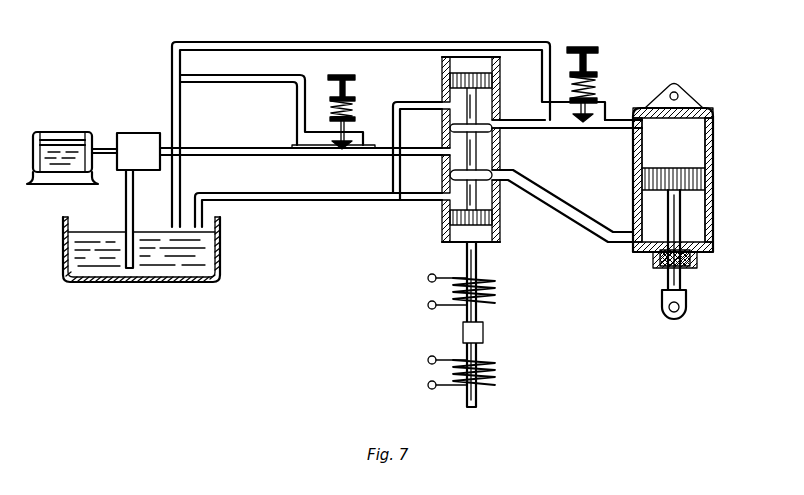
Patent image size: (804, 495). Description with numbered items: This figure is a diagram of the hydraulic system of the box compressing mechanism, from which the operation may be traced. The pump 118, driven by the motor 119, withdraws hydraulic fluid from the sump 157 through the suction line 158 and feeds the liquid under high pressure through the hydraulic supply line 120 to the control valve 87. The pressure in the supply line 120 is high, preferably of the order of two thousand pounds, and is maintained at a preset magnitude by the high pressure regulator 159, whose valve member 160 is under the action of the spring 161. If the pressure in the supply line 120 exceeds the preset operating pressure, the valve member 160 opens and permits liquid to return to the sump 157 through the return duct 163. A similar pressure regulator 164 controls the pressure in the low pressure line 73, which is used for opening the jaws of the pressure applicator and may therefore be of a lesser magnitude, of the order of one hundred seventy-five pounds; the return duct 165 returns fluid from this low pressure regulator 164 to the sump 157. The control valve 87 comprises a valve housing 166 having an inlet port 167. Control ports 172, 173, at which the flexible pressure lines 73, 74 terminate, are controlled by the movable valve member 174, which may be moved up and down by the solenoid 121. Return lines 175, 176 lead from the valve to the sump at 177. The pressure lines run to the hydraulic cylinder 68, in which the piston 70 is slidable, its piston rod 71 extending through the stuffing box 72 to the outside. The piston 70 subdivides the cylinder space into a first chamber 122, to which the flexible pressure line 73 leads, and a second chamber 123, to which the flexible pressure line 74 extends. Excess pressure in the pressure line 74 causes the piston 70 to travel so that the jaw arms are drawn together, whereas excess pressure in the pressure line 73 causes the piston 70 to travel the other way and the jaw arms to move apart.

The motor 119 is at (60, 134).
The pump 118 is at (137, 133).
The suction line 158 is at (126, 198).
The sump 157 is at (208, 253).
The sump connection 177 is at (210, 194).
The return line 176 is at (428, 200).
The hydraulic supply line 120 is at (224, 148).
The return duct 163 is at (237, 77).
The return duct 165 is at (376, 44).
The valve member 160 is at (327, 128).
The high pressure regulator 159 is at (353, 130).
The spring 161 is at (330, 110).
The return line 175 is at (418, 104).
The control valve 87 is at (473, 153).
The inlet port 167 is at (446, 151).
The valve housing 166 is at (497, 141).
The control port 173 is at (505, 163).
The movable valve member 174 is at (477, 200).
The control port 172 is at (500, 124).
The pressure regulator 164 is at (598, 108).
The flexible pressure line 73 is at (620, 128).
The flexible pressure line 74 is at (573, 212).
The hydraulic cylinder 68 is at (686, 202).
The first chamber 122 is at (684, 157).
The piston 70 is at (710, 177).
The second chamber 123 is at (694, 215).
The stuffing box 72 is at (655, 255).
The piston rod 71 is at (683, 275).
The solenoid 121 is at (493, 292).